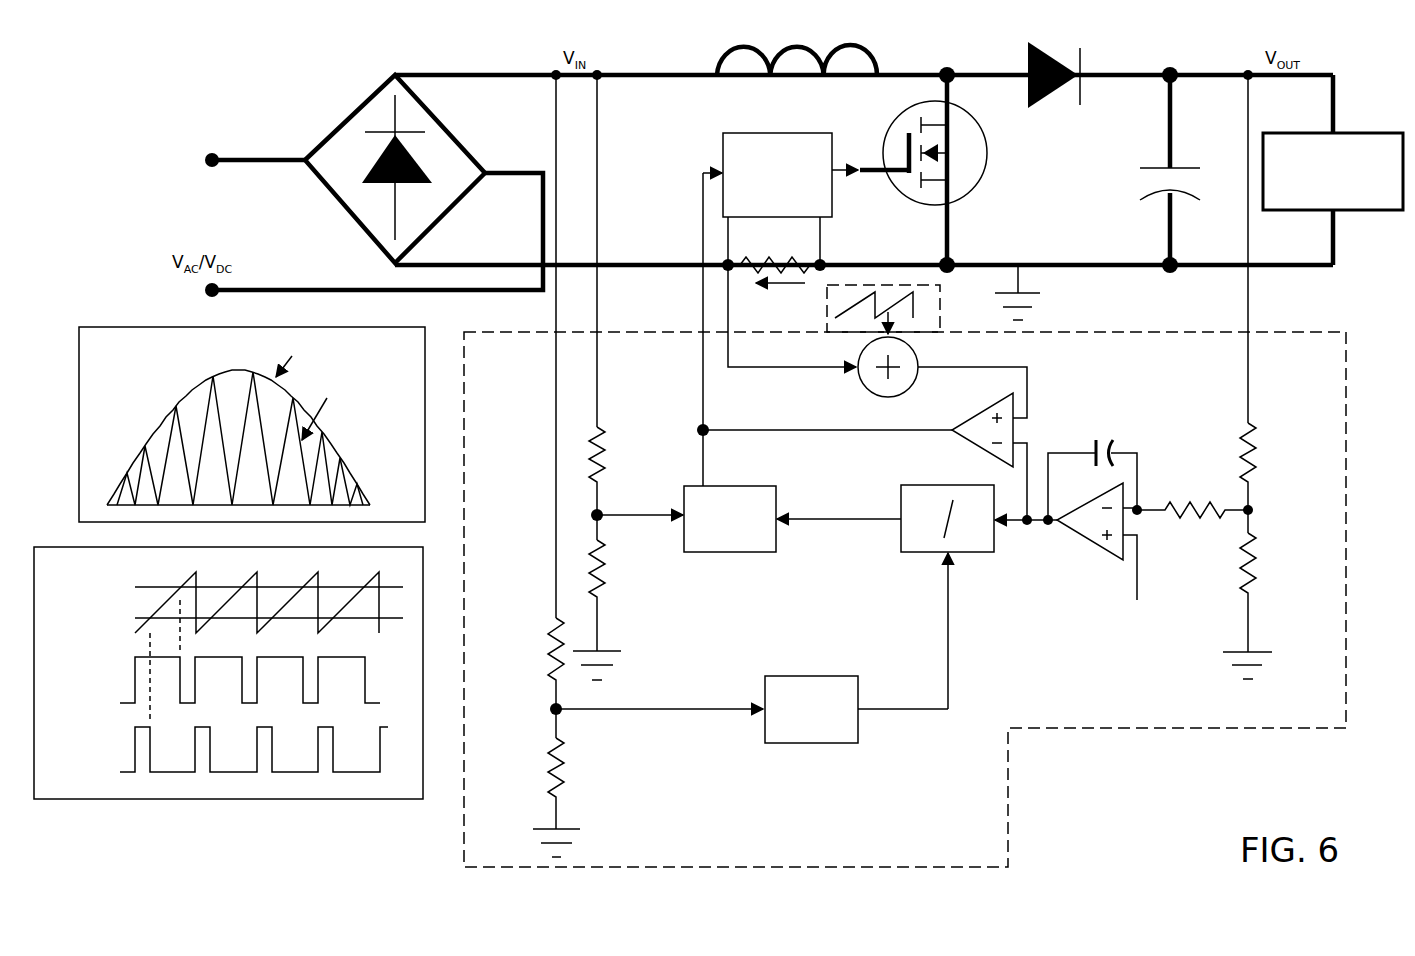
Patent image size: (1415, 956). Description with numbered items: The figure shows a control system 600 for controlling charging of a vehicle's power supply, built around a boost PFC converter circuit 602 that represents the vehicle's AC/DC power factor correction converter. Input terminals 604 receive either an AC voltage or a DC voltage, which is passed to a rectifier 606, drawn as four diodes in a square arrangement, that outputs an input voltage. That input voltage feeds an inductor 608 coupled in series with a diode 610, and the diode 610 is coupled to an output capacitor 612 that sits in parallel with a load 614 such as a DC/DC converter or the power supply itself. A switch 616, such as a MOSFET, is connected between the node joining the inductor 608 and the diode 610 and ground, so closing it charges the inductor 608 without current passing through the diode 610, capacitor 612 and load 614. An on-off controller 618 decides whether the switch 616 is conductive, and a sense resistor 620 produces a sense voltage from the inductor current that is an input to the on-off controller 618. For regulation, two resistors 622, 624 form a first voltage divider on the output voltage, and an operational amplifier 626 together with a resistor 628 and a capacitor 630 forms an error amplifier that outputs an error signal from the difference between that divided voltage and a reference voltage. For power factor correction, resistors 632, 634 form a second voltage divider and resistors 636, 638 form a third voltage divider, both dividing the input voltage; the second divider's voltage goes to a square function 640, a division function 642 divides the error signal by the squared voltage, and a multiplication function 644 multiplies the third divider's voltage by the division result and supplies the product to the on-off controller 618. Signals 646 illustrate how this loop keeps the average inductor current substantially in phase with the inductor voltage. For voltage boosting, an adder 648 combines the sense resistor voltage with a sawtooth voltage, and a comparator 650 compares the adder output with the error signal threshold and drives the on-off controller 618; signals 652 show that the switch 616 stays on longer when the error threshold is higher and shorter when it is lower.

The control system 600 is at (1117, 731).
The boost PFC converter circuit 602 is at (178, 101).
The input terminals 604 is at (212, 172).
The rectifier 606 is at (365, 105).
The inductor 608 is at (717, 70).
The diode 610 is at (1040, 45).
The output capacitor 612 is at (1160, 165).
The load 614 is at (1345, 133).
The switch 616 is at (975, 188).
The on-off controller 618 is at (770, 133).
The sense resistor 620 is at (740, 262).
The resistor 622 is at (1257, 462).
The resistor 624 is at (1257, 579).
The operational amplifier 626 is at (1090, 560).
The resistor 628 is at (1183, 505).
The capacitor 630 is at (1108, 440).
The resistor 632 is at (550, 650).
The resistor 634 is at (548, 764).
The resistor 636 is at (606, 470).
The resistor 638 is at (606, 583).
The square function 640 is at (820, 745).
The division function 642 is at (918, 555).
The multiplication function 644 is at (735, 552).
The signals 646 is at (112, 326).
The adder 648 is at (855, 392).
The comparator 650 is at (952, 440).
The signals 652 is at (172, 800).